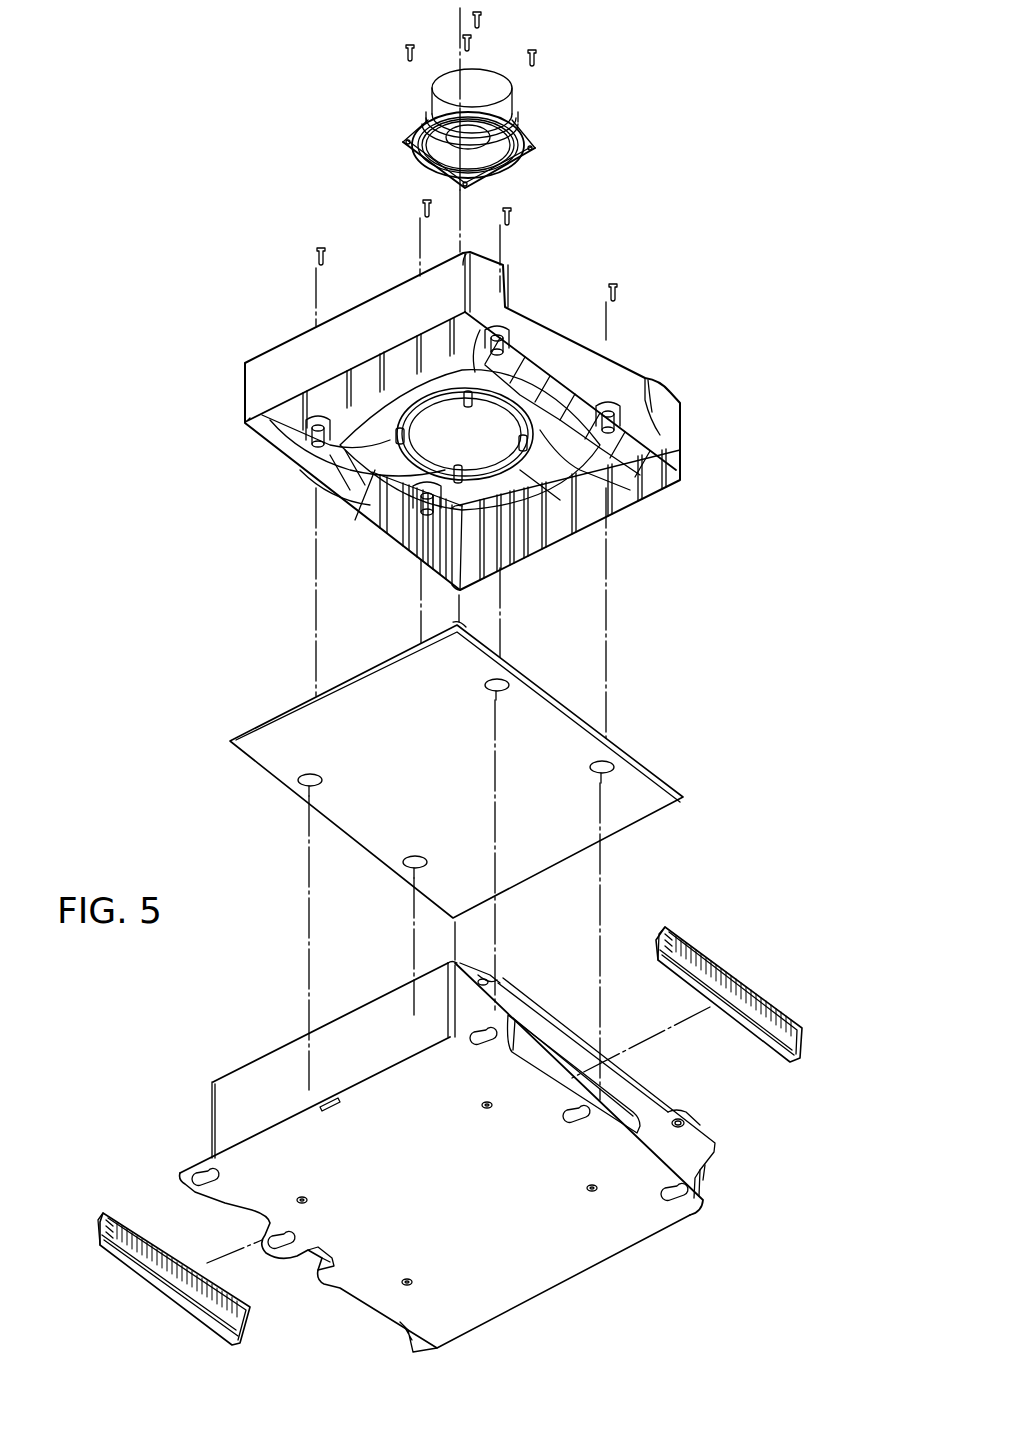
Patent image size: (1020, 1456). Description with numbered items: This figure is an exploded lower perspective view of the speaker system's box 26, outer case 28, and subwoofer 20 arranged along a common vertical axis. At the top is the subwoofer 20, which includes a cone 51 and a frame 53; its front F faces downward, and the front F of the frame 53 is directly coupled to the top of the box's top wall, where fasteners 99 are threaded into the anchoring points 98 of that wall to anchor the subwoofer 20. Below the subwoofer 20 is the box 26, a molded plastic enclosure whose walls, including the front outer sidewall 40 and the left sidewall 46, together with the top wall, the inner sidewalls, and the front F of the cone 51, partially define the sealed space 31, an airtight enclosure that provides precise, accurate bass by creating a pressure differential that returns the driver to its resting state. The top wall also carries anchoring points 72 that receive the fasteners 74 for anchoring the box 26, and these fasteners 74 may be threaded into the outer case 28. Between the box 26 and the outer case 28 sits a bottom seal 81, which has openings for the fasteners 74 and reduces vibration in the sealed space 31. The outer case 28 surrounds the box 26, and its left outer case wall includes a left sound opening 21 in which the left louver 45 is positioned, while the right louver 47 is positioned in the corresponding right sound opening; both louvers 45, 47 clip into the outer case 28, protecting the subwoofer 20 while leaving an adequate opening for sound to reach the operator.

The subwoofer 20 is at (552, 95).
The frame 53 is at (532, 147).
The cone 51 is at (492, 150).
The front F is at (517, 185).
The fasteners 99 is at (412, 47).
The fasteners 74 is at (424, 208).
The sealed space 31 is at (640, 520).
The box 26 is at (673, 373).
The front outer sidewall 40 is at (377, 345).
The left sidewall 46 is at (677, 438).
The anchoring points 98 is at (468, 408).
The anchoring points 72 is at (505, 346).
The bottom seal 81 is at (655, 755).
The outer case 28 is at (580, 1298).
The left sound opening 21 is at (607, 1090).
The left louver 45 is at (743, 988).
The right louver 47 is at (167, 1290).